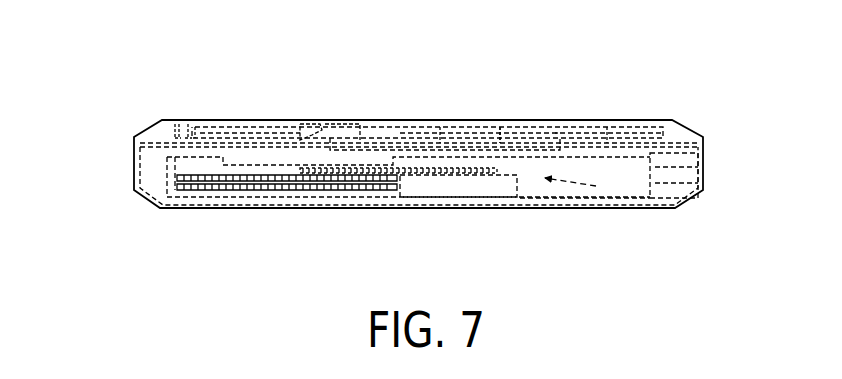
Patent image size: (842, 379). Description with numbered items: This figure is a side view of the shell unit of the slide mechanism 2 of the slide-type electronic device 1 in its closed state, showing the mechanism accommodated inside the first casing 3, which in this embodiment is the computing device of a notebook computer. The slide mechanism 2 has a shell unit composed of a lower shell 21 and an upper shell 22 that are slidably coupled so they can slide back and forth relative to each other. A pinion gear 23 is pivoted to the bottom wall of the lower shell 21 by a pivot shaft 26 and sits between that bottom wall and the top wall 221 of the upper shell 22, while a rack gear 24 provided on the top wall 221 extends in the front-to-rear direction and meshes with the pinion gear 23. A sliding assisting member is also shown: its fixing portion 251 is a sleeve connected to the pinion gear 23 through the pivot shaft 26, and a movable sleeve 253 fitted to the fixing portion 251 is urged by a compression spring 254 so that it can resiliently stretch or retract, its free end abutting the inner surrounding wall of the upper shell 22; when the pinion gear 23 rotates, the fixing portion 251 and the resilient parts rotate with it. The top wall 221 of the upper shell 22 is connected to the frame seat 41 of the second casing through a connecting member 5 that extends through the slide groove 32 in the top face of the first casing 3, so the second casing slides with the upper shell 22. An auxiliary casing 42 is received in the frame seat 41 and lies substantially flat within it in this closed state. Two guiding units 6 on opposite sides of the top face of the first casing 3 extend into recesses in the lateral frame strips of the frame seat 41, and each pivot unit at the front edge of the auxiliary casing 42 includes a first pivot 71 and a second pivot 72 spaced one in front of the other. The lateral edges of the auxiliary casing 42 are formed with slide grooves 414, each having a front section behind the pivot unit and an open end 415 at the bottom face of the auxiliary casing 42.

The slide-type electronic device 1 is at (338, 100).
The slide mechanism 2 is at (585, 200).
The lower shell 21 is at (633, 200).
The upper shell 22 is at (703, 188).
The top wall 221 is at (703, 163).
The pinion gear 23 is at (496, 124).
The rack gear 24 is at (607, 123).
The fixing portion 251 is at (527, 198).
The movable sleeve 253 is at (188, 193).
The compression spring 254 is at (263, 197).
The pivot shaft 26 is at (422, 178).
The first casing 3 is at (135, 168).
The slide groove 32 is at (555, 122).
The frame seat 41 is at (137, 139).
The slide groove 414 is at (472, 127).
The open end 415 is at (223, 123).
The auxiliary casing 42 is at (642, 125).
The connecting member 5 is at (410, 125).
The guiding unit 6 is at (314, 116).
The first pivot 71 is at (177, 120).
The second pivot 72 is at (192, 120).